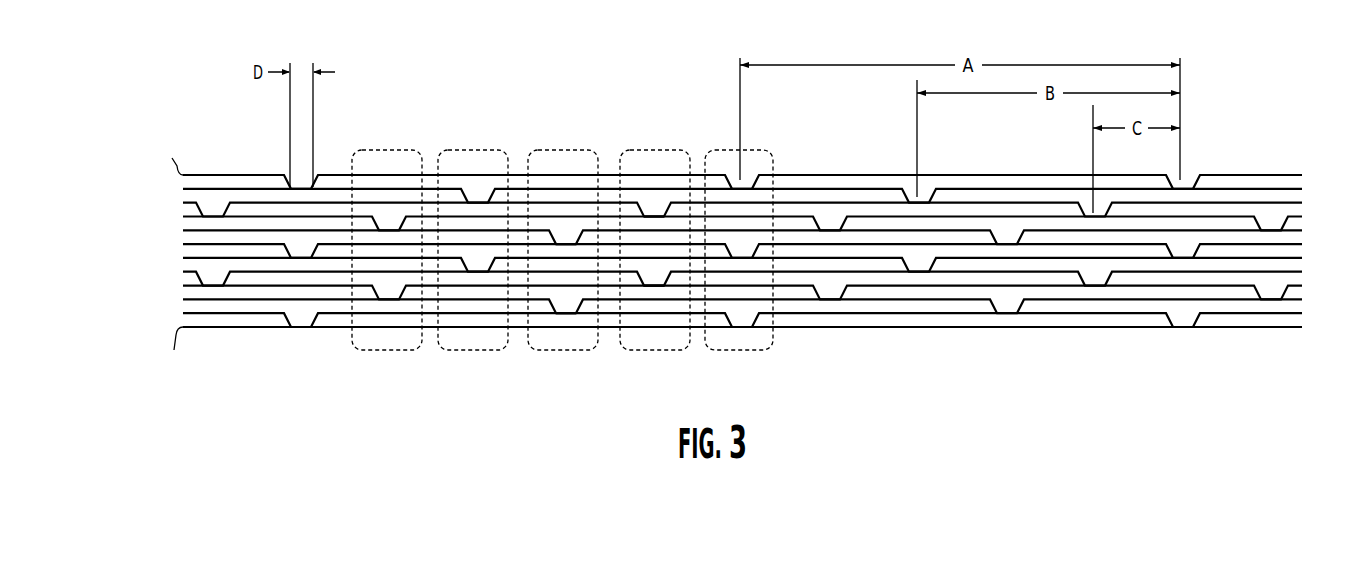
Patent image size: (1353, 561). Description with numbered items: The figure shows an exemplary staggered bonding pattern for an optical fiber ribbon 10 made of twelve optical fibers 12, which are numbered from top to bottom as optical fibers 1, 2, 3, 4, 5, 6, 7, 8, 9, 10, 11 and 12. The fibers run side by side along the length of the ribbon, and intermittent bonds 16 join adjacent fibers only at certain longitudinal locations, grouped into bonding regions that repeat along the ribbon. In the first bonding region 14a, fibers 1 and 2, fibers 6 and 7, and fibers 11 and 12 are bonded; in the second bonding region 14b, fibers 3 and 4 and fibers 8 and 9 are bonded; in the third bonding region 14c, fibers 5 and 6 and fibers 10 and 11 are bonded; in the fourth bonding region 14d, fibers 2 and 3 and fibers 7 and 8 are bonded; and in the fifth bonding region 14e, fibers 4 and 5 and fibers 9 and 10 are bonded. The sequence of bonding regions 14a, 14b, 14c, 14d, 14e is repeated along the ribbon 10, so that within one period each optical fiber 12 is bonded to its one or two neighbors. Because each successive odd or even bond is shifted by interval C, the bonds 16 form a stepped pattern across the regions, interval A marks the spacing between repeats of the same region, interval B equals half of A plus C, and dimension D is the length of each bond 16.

The optical fiber 1 is at (730, 164).
The optical fiber 2 is at (183, 189).
The optical fiber 3 is at (183, 203).
The optical fiber 4 is at (183, 216).
The optical fiber 5 is at (183, 230).
The optical fiber 6 is at (183, 244).
The optical fiber 7 is at (183, 258).
The optical fiber 8 is at (183, 272).
The optical fiber 9 is at (183, 286).
The optical fiber ribbon 10 is at (183, 299).
The optical fiber 11 is at (183, 313).
The optical fibers 12 is at (836, 150).
The first bonding region 14a is at (765, 142).
The second bonding region 14b is at (676, 142).
The third bonding region 14c is at (585, 142).
The fourth bonding region 14d is at (494, 142).
The fifth bonding region 14e is at (404, 142).
The bonds 16 is at (565, 226).